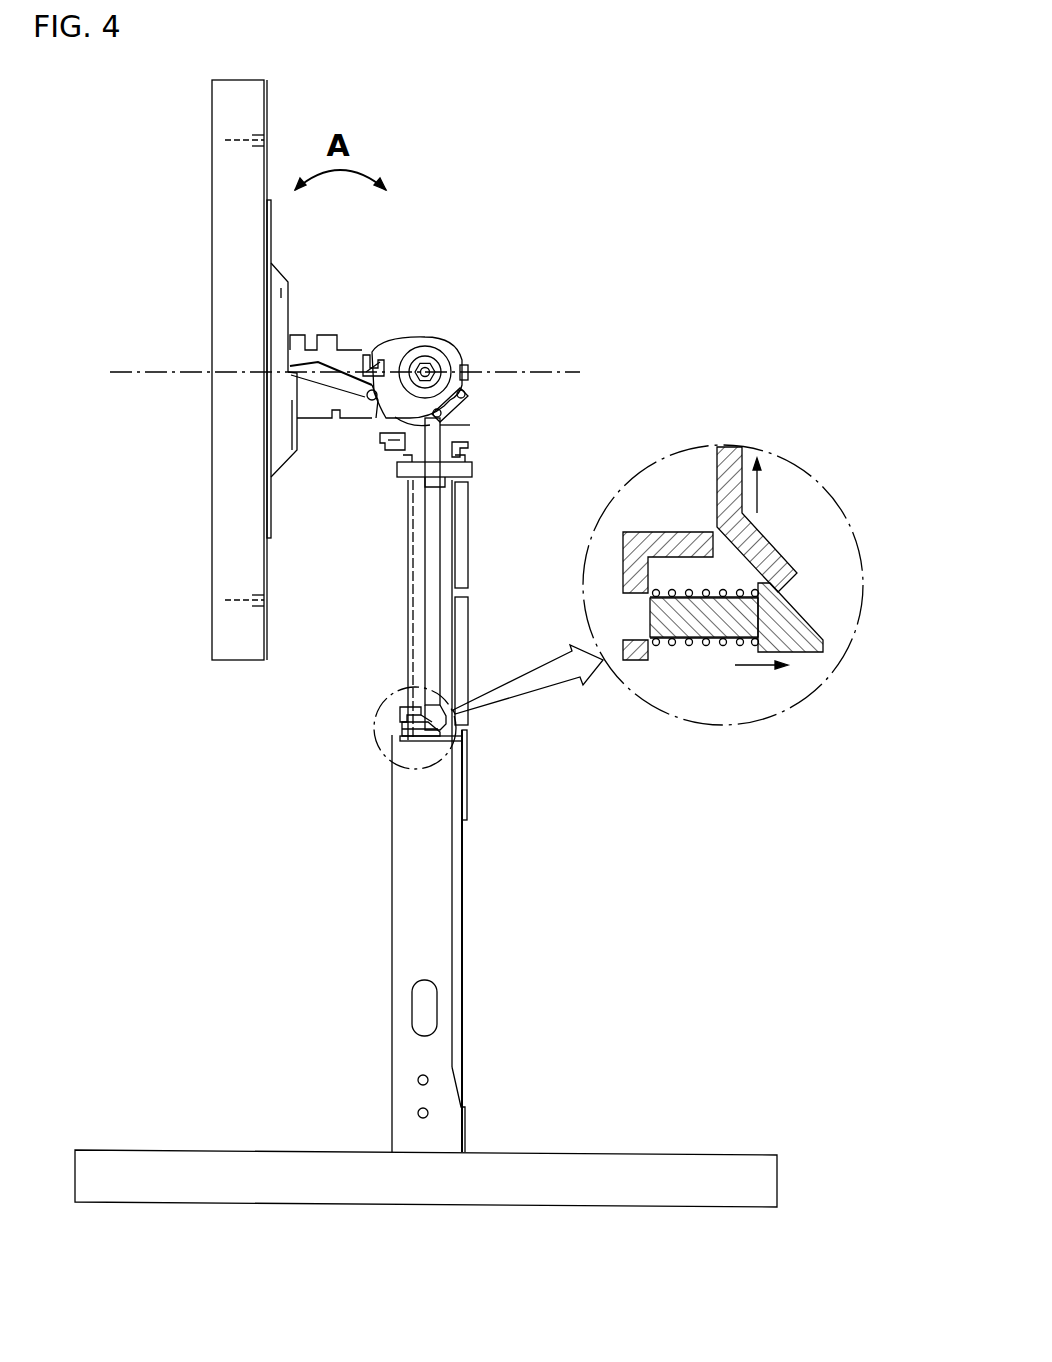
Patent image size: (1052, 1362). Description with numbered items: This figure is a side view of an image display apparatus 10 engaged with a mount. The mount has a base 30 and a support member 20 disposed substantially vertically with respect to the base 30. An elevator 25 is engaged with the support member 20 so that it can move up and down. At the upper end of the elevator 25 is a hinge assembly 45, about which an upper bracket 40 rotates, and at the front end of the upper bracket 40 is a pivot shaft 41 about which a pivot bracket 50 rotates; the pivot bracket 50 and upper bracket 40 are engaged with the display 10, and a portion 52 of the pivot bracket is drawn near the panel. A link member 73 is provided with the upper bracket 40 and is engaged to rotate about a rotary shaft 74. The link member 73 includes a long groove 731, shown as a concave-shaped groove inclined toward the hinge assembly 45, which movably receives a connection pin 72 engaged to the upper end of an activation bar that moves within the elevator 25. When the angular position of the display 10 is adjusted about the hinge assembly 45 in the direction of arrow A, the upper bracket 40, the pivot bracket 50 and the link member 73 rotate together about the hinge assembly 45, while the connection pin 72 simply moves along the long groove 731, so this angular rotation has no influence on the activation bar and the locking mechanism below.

The image display apparatus 10 is at (214, 228).
The support member 20 is at (408, 880).
The elevator 25 is at (469, 552).
The base 30 is at (620, 1170).
The upper bracket 40 is at (415, 336).
The pivot shaft 41 is at (318, 362).
The hinge assembly 45 is at (468, 362).
The pivot bracket 50 is at (290, 284).
The bracket lower portion 52 is at (295, 446).
The connection pin 72 is at (468, 428).
The link member 73 is at (378, 430).
The long groove 731 is at (470, 400).
The rotary shaft 74 is at (355, 347).